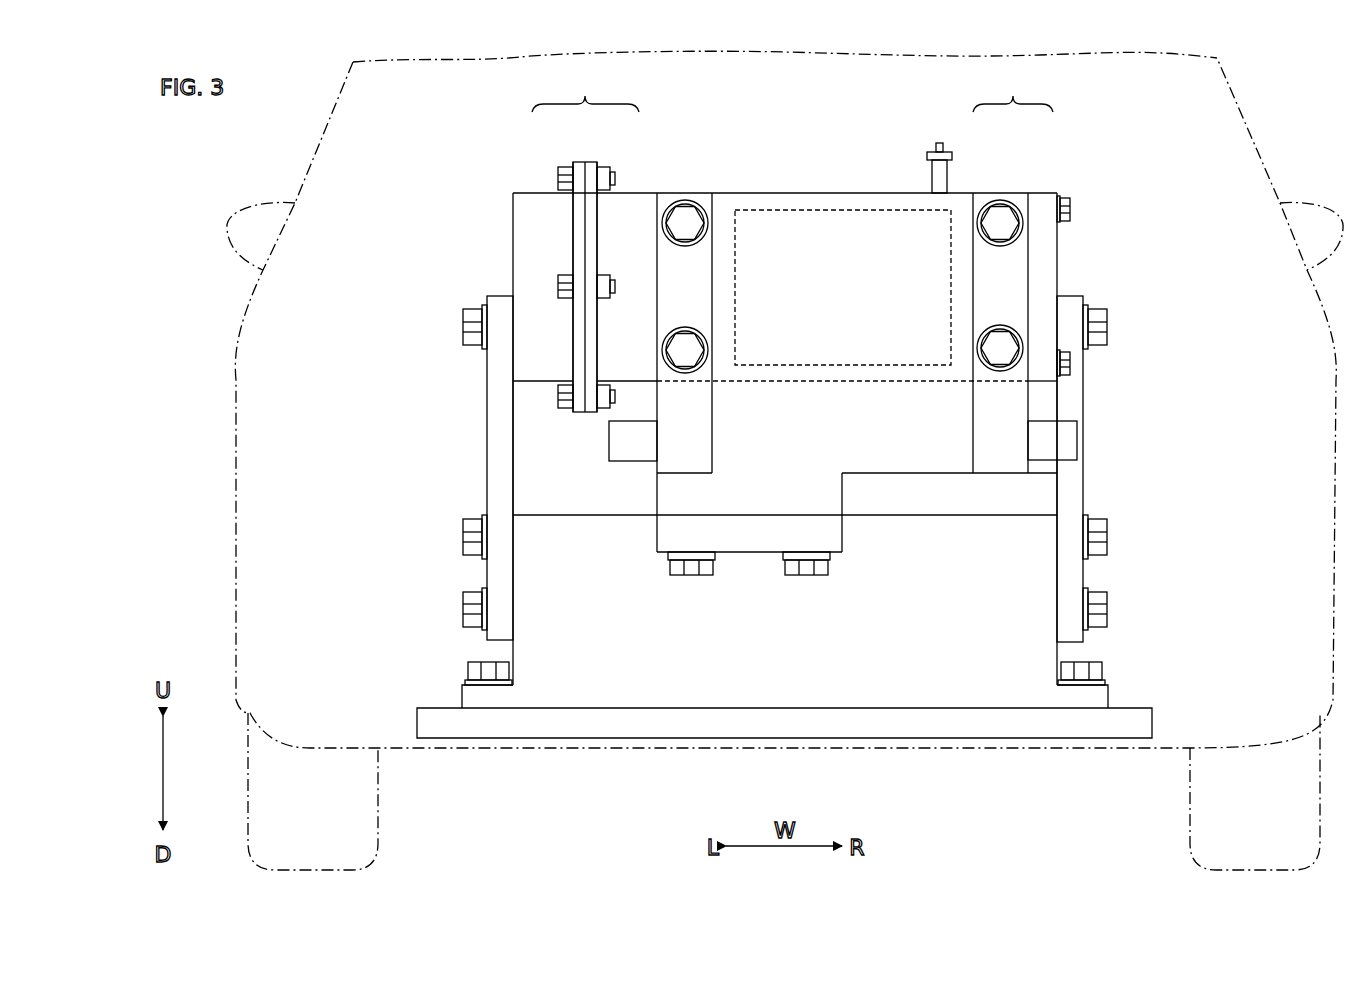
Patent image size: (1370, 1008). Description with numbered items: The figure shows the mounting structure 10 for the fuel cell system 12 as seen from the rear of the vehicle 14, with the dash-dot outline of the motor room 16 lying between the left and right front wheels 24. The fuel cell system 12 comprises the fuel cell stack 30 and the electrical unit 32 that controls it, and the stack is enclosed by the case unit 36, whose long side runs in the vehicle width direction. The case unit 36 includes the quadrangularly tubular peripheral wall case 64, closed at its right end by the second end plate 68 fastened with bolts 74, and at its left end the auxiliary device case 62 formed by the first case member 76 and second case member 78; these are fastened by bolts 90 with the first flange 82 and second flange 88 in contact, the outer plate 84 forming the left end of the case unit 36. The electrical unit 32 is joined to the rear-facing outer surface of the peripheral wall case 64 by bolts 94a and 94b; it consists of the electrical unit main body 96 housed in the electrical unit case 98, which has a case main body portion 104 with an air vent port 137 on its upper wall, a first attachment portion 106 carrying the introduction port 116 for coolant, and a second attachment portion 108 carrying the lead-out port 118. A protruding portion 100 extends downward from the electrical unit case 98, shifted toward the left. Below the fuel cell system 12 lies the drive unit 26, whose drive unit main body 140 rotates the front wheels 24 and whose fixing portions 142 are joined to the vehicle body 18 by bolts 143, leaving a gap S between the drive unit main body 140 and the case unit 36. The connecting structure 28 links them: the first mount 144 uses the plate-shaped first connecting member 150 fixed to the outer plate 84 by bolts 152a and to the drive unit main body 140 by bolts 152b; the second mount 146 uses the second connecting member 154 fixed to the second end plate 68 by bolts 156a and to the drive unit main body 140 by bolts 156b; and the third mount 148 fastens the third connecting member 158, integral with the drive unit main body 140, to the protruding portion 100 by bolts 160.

The mounting structure 10 is at (450, 163).
The fuel cell system 12 is at (1013, 95).
The vehicle 14 is at (298, 187).
The motor room 16 is at (1095, 153).
The vehicle body 18 is at (588, 722).
The front wheels 24 is at (378, 801).
The drive unit 26 is at (503, 650).
The connecting structure 28 is at (481, 278).
The fuel cell stack 30 is at (1045, 189).
The electrical unit 32 is at (958, 188).
The case unit 36 is at (1057, 237).
The auxiliary device case 62 is at (585, 95).
The peripheral wall case 64 is at (793, 383).
The second end plate 68 is at (1045, 263).
The bolts 74 is at (1071, 215).
The first case member 76 is at (591, 162).
The second case member 78 is at (577, 162).
The first flange 82 is at (592, 258).
The outer plate 84 is at (513, 219).
The second flange 88 is at (580, 248).
The bolts 90 is at (560, 174).
The bolts 94a is at (688, 226).
The bolts 94b is at (996, 229).
The electrical unit main body 96 is at (835, 210).
The electrical unit case 98 is at (773, 193).
The protruding portion 100 is at (830, 500).
The case main body portion 104 is at (887, 193).
The first attachment portion 106 is at (700, 288).
The second attachment portion 108 is at (990, 280).
The introduction port 116 is at (622, 447).
The lead-out port 118 is at (1060, 440).
The air vent port 137 is at (940, 142).
The drive unit main body 140 is at (716, 686).
The fixing portions 142 is at (470, 697).
The bolts 143 is at (472, 670).
The first mount 144 is at (481, 293).
The second mount 146 is at (1090, 292).
The third mount 148 is at (652, 562).
The first connecting member 150 is at (487, 384).
The bolts 152a is at (468, 318).
The bolts 152b is at (470, 605).
The second connecting member 154 is at (1068, 397).
The bolts 156a is at (1100, 318).
The bolts 156b is at (1100, 605).
The third connecting member 158 is at (830, 540).
The bolts 160 is at (693, 566).
The gap S is at (535, 430).